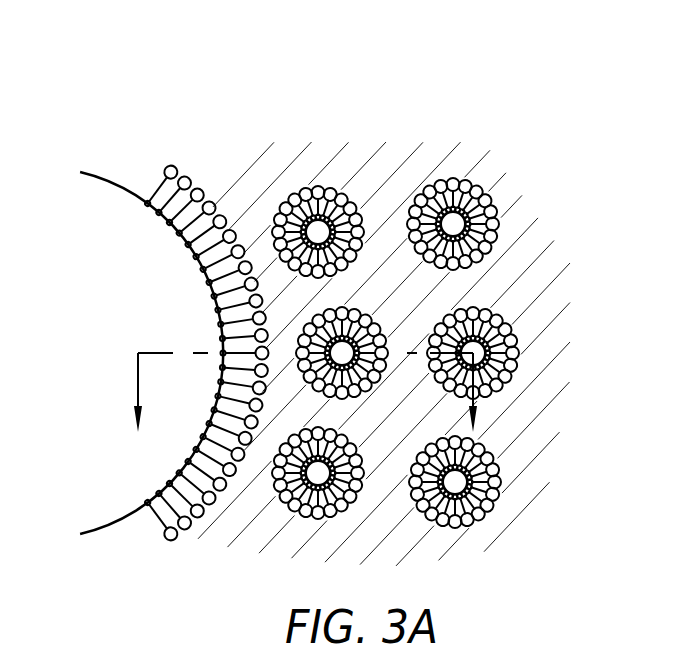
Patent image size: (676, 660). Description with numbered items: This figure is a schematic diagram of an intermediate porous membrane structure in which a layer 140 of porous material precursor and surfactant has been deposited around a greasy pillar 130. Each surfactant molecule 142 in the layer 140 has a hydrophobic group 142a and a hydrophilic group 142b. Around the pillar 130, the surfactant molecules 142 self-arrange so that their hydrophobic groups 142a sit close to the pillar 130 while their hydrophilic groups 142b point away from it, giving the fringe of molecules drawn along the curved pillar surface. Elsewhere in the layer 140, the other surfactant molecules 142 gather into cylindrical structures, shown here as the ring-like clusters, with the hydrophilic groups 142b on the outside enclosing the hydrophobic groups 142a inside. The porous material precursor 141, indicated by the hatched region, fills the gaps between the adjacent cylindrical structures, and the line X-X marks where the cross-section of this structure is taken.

The pillar 130 is at (67, 365).
The layer 140 is at (226, 90).
The porous material precursor 141 is at (379, 183).
The surfactant molecule 142 is at (478, 212).
The hydrophobic group 142a is at (480, 210).
The hydrophilic group 142b is at (455, 178).